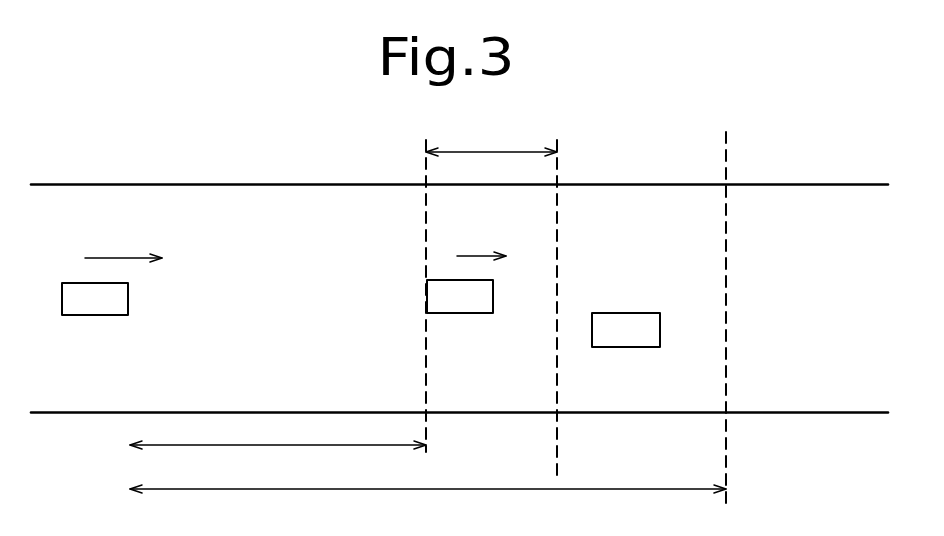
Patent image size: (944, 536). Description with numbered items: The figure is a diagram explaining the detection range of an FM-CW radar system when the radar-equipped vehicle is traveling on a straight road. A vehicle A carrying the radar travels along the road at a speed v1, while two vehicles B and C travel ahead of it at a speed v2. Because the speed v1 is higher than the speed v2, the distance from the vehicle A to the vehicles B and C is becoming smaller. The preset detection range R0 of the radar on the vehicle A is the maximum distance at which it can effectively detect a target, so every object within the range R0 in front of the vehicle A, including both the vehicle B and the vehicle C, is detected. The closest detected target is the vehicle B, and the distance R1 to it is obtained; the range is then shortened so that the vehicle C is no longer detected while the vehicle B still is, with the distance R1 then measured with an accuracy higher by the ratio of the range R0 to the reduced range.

The vehicle A is at (92, 315).
The vehicle B is at (465, 313).
The vehicle C is at (628, 347).
The speed v1 is at (123, 243).
The speed v2 is at (481, 242).
The distance R1 is at (278, 462).
The detection range R0 is at (428, 506).